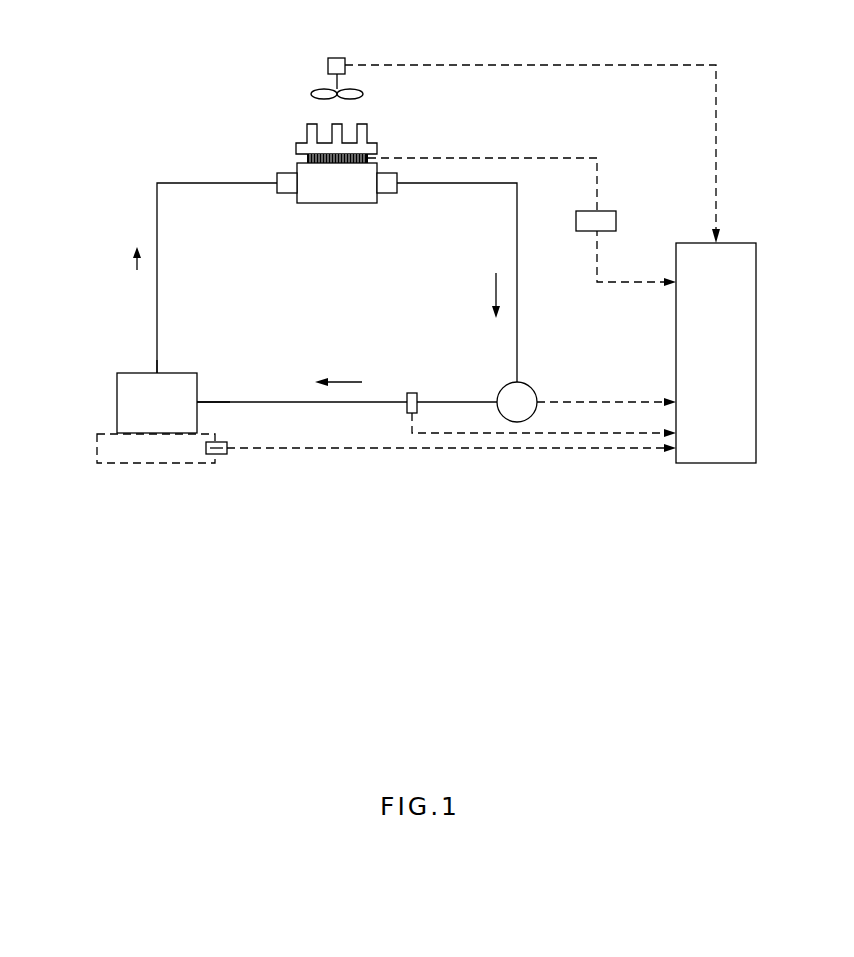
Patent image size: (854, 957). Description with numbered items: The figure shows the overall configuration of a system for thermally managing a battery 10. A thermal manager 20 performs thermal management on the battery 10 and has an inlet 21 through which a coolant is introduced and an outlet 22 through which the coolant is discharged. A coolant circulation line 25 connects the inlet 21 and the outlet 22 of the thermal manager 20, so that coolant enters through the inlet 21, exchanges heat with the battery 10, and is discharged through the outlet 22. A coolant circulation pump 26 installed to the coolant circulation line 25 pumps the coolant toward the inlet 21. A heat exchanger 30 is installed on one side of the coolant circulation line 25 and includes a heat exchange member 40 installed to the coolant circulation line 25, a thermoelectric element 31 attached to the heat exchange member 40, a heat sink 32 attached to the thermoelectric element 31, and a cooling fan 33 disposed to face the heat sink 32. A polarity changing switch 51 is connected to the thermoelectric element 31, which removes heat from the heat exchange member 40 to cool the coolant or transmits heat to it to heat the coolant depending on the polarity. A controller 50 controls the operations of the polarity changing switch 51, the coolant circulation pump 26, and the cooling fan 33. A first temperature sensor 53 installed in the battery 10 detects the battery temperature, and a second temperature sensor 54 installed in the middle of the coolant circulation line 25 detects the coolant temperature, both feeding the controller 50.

The battery 10 is at (155, 464).
The thermal manager 20 is at (117, 400).
The inlet 21 is at (197, 402).
The outlet 22 is at (157, 373).
The coolant circulation line 25 is at (156, 222).
The coolant circulation pump 26 is at (531, 386).
The heat exchanger 30 is at (351, 183).
The thermoelectric element 31 is at (304, 158).
The heat sink 32 is at (307, 134).
The cooling fan 33 is at (318, 90).
The heat exchange member 40 is at (336, 203).
The controller 50 is at (756, 352).
The polarity changing switch 51 is at (603, 211).
The first temperature sensor 53 is at (217, 455).
The second temperature sensor 54 is at (410, 393).